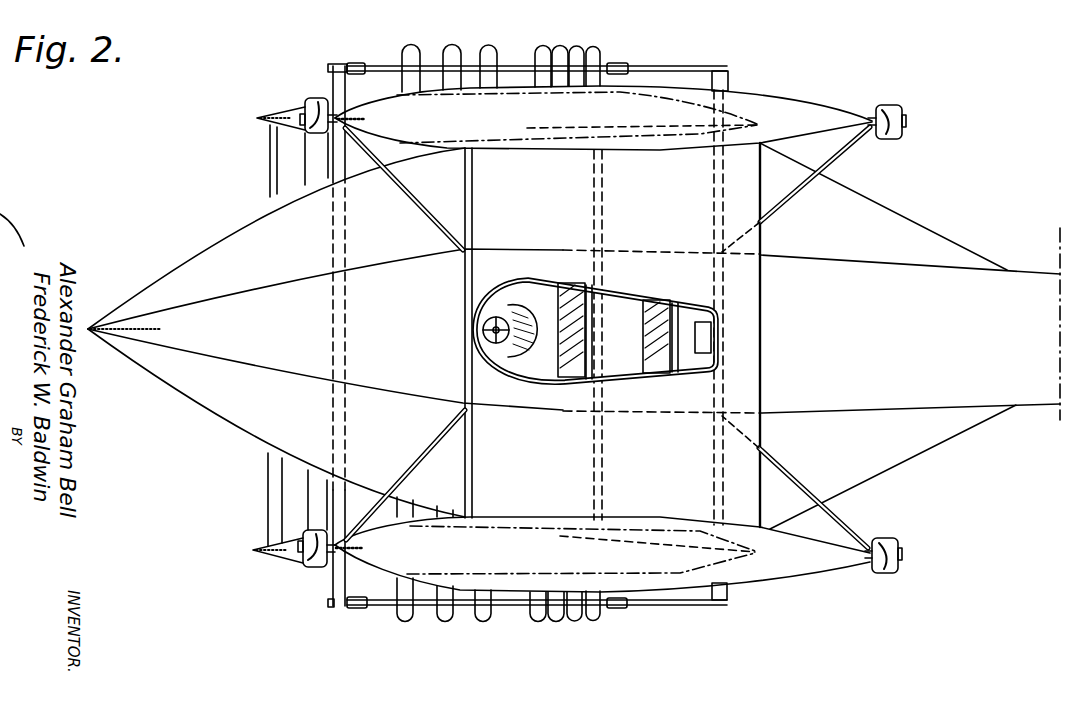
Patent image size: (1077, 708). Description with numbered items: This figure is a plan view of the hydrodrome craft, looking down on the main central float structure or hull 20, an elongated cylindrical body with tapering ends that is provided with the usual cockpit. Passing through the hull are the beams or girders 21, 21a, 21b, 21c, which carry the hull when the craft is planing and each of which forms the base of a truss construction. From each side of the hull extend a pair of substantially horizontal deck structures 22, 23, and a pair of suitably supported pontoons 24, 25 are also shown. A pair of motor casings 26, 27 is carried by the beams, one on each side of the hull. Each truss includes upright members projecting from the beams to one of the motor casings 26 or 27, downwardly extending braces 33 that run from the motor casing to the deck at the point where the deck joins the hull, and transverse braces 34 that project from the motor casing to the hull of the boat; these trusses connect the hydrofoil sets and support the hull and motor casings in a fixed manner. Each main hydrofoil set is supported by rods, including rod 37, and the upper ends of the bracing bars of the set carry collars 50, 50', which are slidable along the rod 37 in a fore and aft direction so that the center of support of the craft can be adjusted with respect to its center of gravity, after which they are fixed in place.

The main central float structure or hull 20 is at (1010, 290).
The beam or girder 21 is at (340, 500).
The beam or girder 21a is at (463, 493).
The beam or girder 21b is at (598, 482).
The beam or girder 21c is at (713, 477).
The deck structure 22 is at (238, 430).
The deck structure 23 is at (230, 233).
The pontoon 24 is at (287, 115).
The pontoon 25 is at (292, 553).
The motor casing 26 is at (653, 98).
The motor casing 27 is at (520, 578).
The downwardly extending brace 33 is at (413, 200).
The transverse brace 34 is at (468, 313).
The rod 37 is at (508, 70).
The collar 50 is at (359, 334).
The collar 50' is at (629, 333).